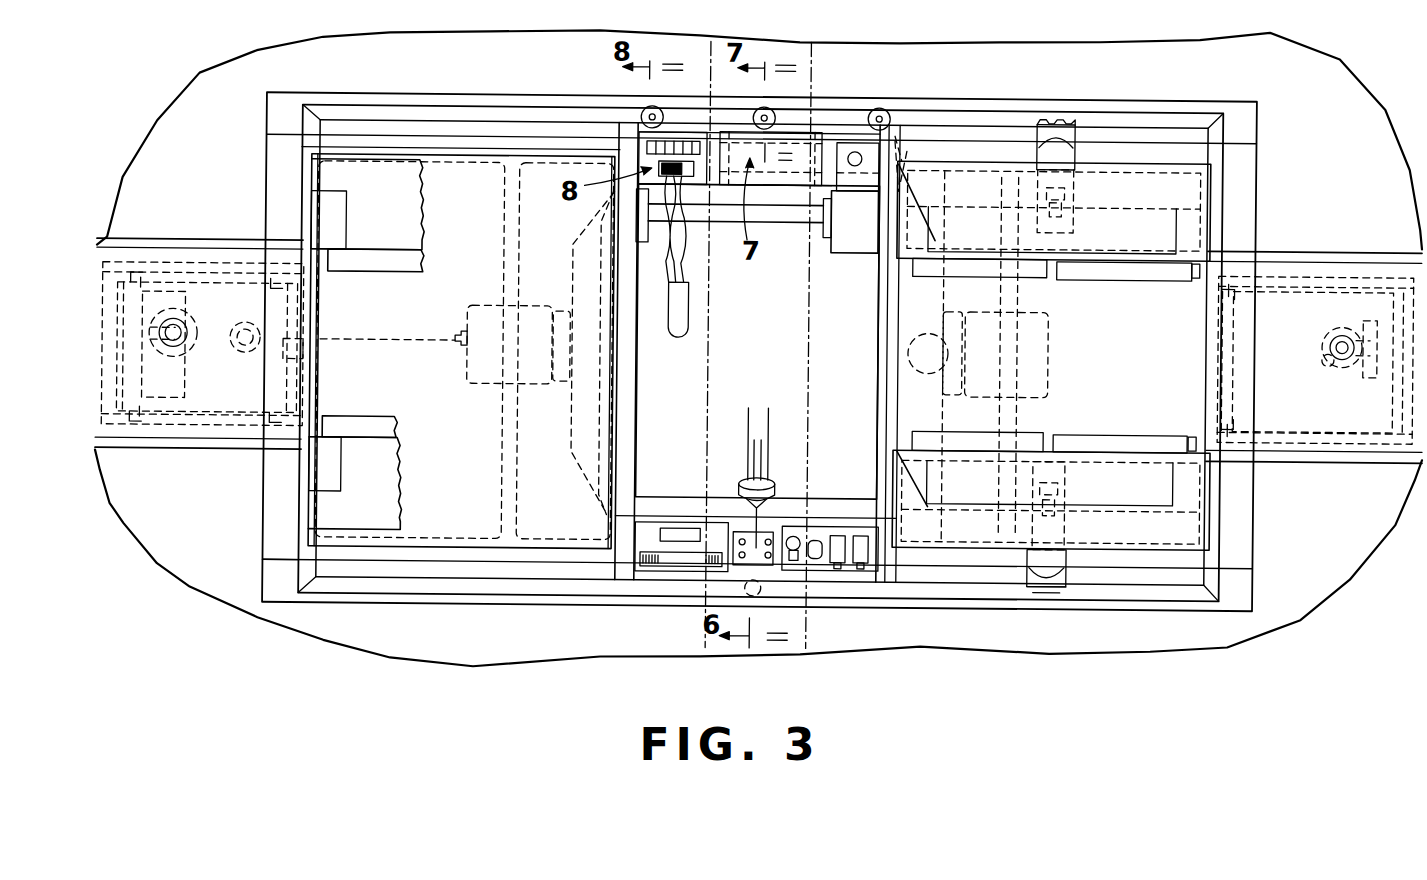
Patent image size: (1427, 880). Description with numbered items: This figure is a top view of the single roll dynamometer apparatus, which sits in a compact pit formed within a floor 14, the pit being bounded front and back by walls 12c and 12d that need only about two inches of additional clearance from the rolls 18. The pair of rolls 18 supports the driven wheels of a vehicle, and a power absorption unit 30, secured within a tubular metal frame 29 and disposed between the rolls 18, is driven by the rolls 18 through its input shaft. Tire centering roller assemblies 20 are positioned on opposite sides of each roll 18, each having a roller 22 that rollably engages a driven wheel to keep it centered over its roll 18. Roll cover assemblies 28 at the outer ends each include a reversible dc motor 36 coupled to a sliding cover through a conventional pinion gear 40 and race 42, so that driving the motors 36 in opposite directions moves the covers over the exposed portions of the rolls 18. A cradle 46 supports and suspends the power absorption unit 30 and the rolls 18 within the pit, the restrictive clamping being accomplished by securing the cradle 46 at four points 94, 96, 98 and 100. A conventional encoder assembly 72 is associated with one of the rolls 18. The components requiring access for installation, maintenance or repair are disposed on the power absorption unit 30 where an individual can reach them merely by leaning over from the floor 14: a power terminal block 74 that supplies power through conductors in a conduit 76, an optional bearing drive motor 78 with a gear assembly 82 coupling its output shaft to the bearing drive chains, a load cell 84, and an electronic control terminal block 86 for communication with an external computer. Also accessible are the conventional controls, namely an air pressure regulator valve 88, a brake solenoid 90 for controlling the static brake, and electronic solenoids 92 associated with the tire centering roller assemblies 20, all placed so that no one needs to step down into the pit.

The front wall 12c is at (517, 593).
The back wall 12d is at (358, 104).
The floor 14 is at (348, 634).
The rolls 18 is at (422, 162).
The tire centering roller assemblies 20 is at (1072, 117).
The roller 22 is at (1115, 272).
The roll cover assemblies 28 is at (172, 248).
The tubular metal frame 29 is at (410, 591).
The power absorption unit 30 is at (786, 348).
The reversible dc motor 36 is at (210, 350).
The pinion gear 40 is at (195, 331).
The race 42 is at (1358, 360).
The cradle 46 is at (583, 481).
The encoder assembly 72 is at (318, 382).
The power terminal block 74 is at (681, 142).
The conduit 76 is at (684, 308).
The bearing drive motor 78 is at (728, 182).
The gear assembly 82 is at (850, 240).
The load cell 84 is at (748, 480).
The electronic control terminal block 86 is at (662, 575).
The air pressure regulator valve 88 is at (795, 535).
The brake solenoid 90 is at (816, 538).
The electronic solenoids 92 is at (863, 568).
The securing point 94 is at (733, 585).
The securing point 96 is at (785, 100).
The securing point 98 is at (885, 96).
The securing point 100 is at (622, 97).